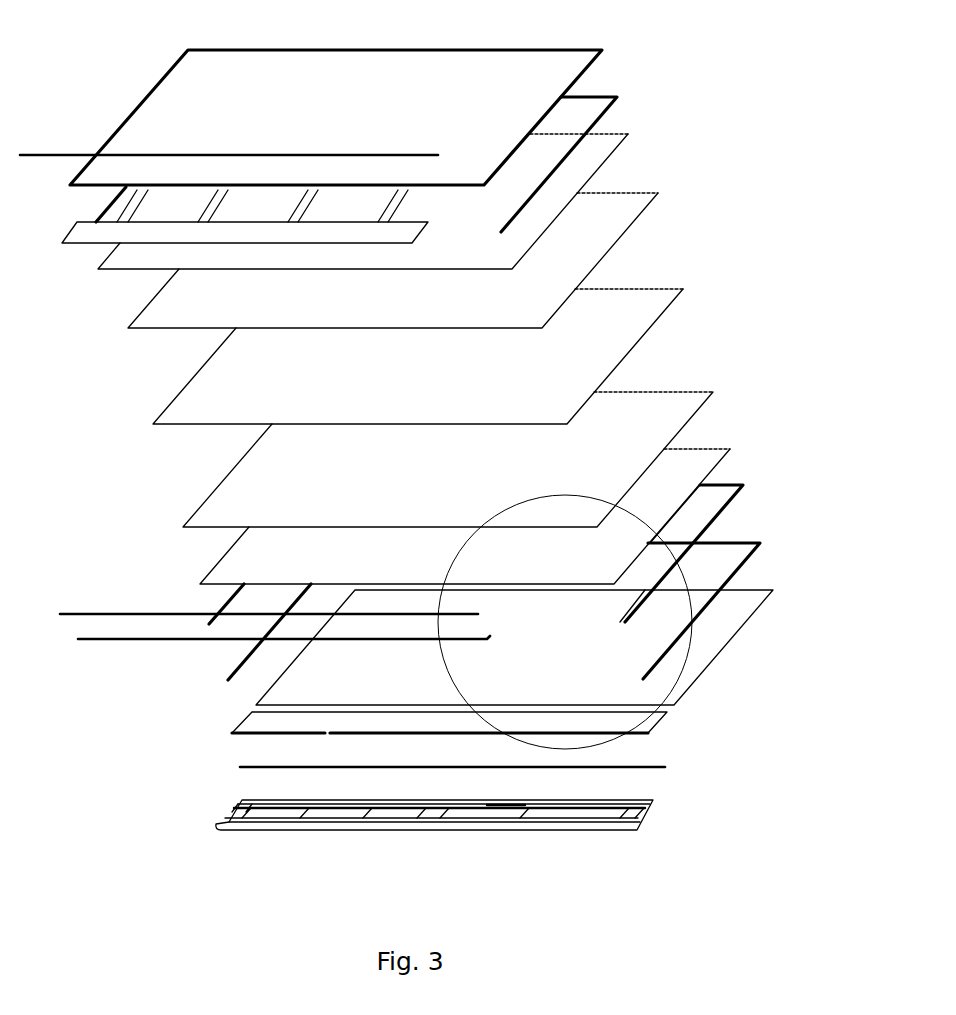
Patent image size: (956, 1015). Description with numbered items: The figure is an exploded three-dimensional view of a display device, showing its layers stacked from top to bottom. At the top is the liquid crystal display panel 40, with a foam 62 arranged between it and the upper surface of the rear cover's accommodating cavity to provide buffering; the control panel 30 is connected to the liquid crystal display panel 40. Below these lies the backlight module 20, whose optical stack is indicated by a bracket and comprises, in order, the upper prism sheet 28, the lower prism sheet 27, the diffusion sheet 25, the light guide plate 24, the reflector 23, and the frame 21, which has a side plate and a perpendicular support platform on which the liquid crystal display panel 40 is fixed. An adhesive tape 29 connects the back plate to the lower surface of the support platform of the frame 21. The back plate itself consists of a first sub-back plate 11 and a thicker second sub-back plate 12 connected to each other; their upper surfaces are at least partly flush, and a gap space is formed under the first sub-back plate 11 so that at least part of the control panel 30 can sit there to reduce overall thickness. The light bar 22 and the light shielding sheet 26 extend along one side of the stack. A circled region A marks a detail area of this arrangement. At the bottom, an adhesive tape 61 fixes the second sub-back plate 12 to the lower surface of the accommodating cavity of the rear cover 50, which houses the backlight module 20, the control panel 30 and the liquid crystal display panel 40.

The liquid crystal display panel 40 is at (563, 63).
The foam 62 is at (116, 156).
The control panel 30 is at (112, 238).
The backlight module 20 is at (705, 95).
The upper prism sheet 28 is at (592, 155).
The lower prism sheet 27 is at (620, 210).
The diffusion sheet 25 is at (637, 313).
The light guide plate 24 is at (667, 395).
The reflector 23 is at (680, 462).
The frame 21 is at (717, 480).
The adhesive tape 29 is at (737, 540).
The second sub-back plate 12 is at (732, 602).
The light shielding sheet 26 is at (168, 614).
The light bar 22 is at (122, 639).
The region A is at (687, 672).
The first sub-back plate 11 is at (263, 722).
The adhesive tape 61 is at (652, 767).
The rear cover 50 is at (653, 798).